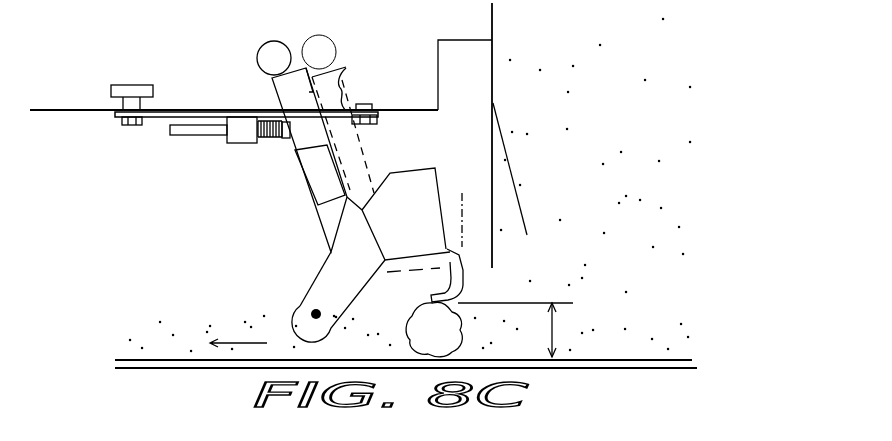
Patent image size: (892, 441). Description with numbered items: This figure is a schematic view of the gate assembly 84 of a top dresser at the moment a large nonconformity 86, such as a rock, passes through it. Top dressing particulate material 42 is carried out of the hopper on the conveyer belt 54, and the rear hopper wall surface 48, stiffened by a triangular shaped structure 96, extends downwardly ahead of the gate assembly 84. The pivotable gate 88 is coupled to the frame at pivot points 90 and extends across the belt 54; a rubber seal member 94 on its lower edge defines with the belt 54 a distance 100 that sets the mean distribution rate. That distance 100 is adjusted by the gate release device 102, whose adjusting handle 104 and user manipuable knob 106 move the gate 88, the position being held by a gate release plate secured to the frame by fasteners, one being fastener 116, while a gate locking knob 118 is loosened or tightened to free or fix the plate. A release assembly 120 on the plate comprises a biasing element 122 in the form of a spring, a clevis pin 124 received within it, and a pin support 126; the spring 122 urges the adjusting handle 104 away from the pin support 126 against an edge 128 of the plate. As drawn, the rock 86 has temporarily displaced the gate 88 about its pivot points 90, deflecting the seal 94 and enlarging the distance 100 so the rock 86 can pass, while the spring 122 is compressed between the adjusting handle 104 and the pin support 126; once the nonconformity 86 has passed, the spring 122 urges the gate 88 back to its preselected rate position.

The particulate matter 42 is at (640, 118).
The rear hopper wall surface 48 is at (492, 53).
The conveyer belt 54 is at (655, 360).
The gate assembly 84 is at (351, 242).
The nonconformity 86 is at (463, 333).
The pivotable gate 88 is at (407, 170).
The pivot points 90 is at (298, 306).
The seal member 94 is at (475, 288).
The triangular shaped structure 96 is at (512, 184).
The distance 100 is at (557, 333).
The gate release device 102 is at (228, 52).
The adjusting handle 104 is at (276, 88).
The user manipuable knob 106 is at (274, 41).
The second fastener 116 is at (373, 125).
The gate locking knob 118 is at (123, 85).
The release assembly 120 is at (189, 168).
The biasing element 122 is at (277, 140).
The clevis pin 124 is at (172, 137).
The pin support 126 is at (233, 143).
The edge of the gate plate 128 is at (347, 108).